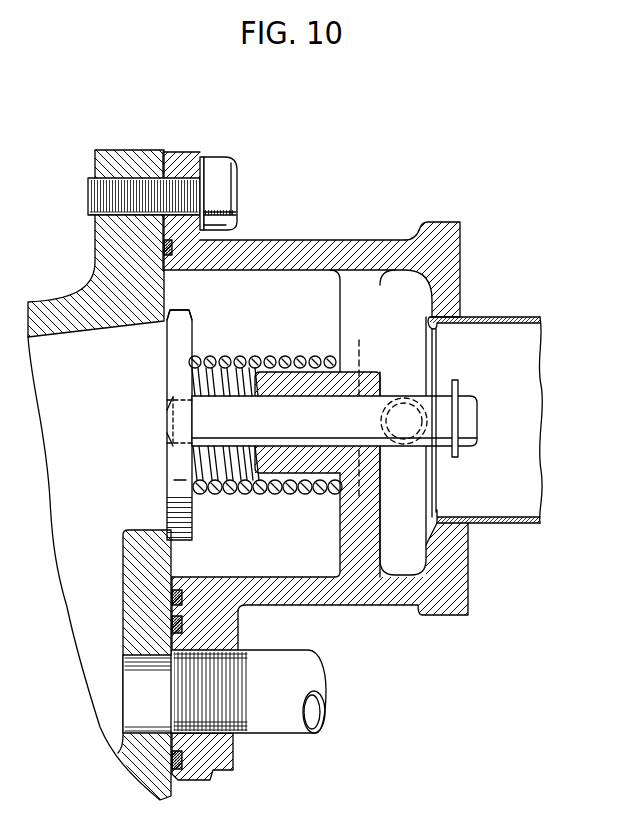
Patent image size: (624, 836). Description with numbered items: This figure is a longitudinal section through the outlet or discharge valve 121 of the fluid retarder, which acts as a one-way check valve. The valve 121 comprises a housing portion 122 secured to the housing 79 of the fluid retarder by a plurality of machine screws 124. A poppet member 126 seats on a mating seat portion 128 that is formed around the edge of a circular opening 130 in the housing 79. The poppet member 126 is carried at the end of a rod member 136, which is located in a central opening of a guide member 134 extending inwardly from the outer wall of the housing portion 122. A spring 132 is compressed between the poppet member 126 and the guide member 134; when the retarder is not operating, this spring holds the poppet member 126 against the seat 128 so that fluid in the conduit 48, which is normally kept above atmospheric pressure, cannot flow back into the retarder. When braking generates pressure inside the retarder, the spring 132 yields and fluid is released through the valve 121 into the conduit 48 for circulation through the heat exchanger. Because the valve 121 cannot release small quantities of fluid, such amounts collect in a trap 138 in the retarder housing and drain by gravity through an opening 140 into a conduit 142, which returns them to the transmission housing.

The conduit 48 is at (504, 317).
The housing of the fluid retarder 79 is at (127, 150).
The discharge valve 121 is at (324, 230).
The housing portion 122 is at (431, 226).
The machine screws 124 is at (220, 164).
The poppet member 126 is at (178, 307).
The seat portion 128 is at (192, 313).
The circular opening 130 is at (135, 322).
The spring 132 is at (283, 362).
The guide member 134 is at (382, 473).
The rod member 136 is at (374, 400).
The trap 138 is at (102, 703).
The opening 140 is at (133, 678).
The conduit 142 is at (280, 727).